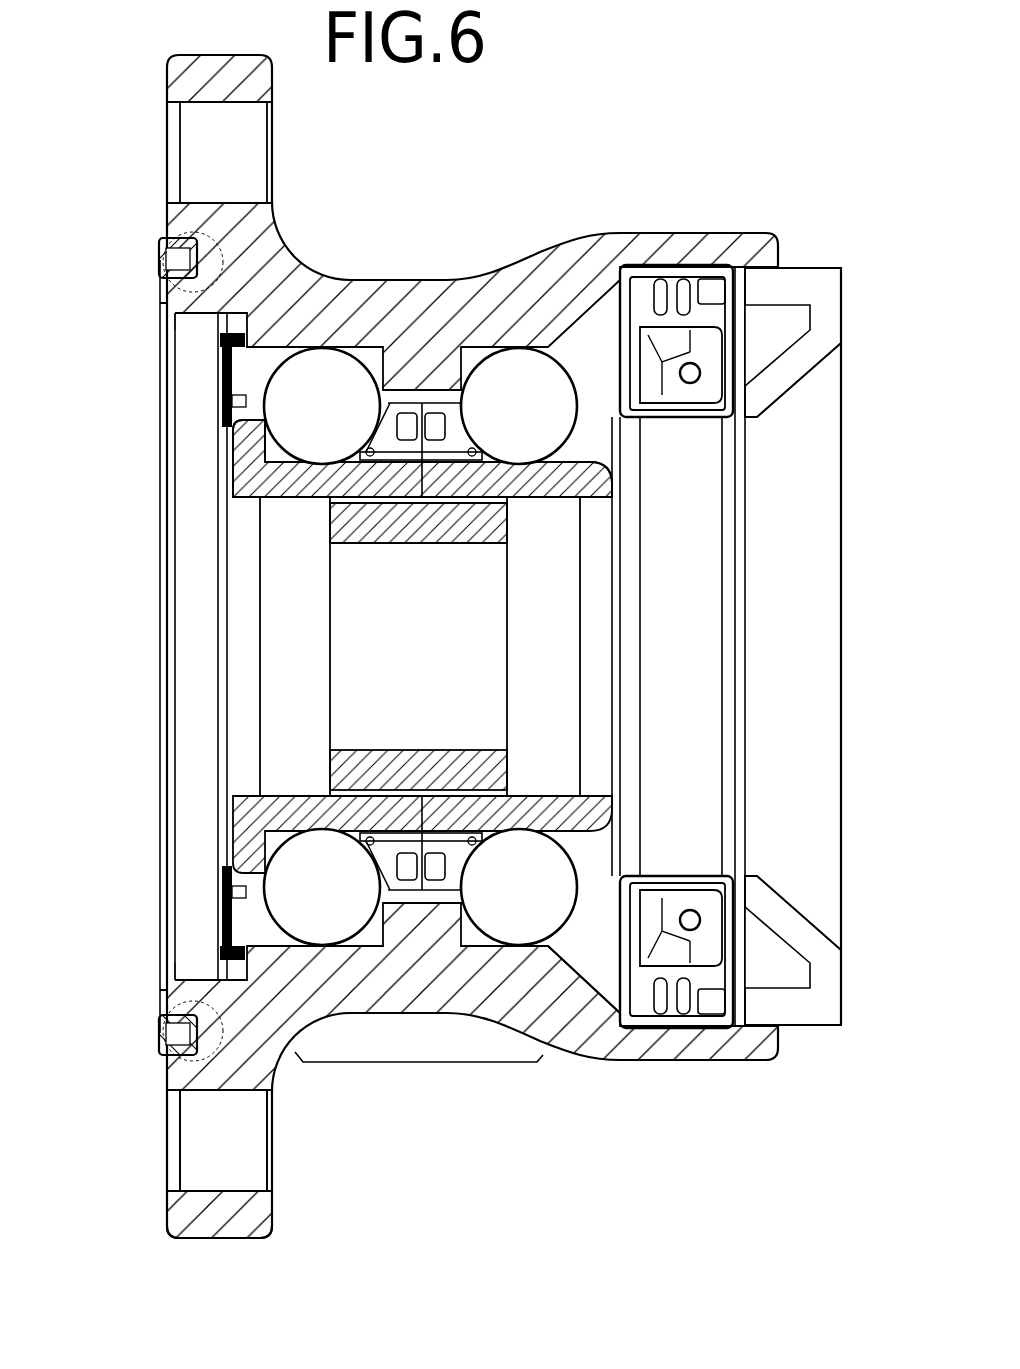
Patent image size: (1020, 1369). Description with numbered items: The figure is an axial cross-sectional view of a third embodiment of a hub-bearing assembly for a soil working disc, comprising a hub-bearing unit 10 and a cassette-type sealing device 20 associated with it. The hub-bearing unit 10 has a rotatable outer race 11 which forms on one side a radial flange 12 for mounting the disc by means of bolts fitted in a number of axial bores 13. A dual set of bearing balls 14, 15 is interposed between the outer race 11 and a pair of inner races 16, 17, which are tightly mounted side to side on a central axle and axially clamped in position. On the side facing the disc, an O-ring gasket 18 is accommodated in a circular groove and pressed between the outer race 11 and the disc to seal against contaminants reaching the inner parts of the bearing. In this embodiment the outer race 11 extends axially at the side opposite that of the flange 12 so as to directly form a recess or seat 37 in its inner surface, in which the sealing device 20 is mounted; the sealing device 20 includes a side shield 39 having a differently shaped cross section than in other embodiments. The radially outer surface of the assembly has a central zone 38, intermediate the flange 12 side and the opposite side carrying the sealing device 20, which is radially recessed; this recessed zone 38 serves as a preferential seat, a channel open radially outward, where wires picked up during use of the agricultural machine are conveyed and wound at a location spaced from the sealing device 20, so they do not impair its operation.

The hub-bearing unit 10 is at (392, 262).
The outer race 11 is at (432, 328).
The radial flange 12 is at (252, 1220).
The axial bores 13 is at (215, 1158).
The bearing balls 14 is at (300, 903).
The bearing balls 15 is at (540, 858).
The inner race 16 is at (236, 470).
The inner race 17 is at (617, 490).
The O-ring gasket 18 is at (178, 1037).
The sealing device 20 is at (596, 950).
The seat 37 is at (683, 266).
The central zone 38 is at (423, 1063).
The side shield 39 is at (812, 265).